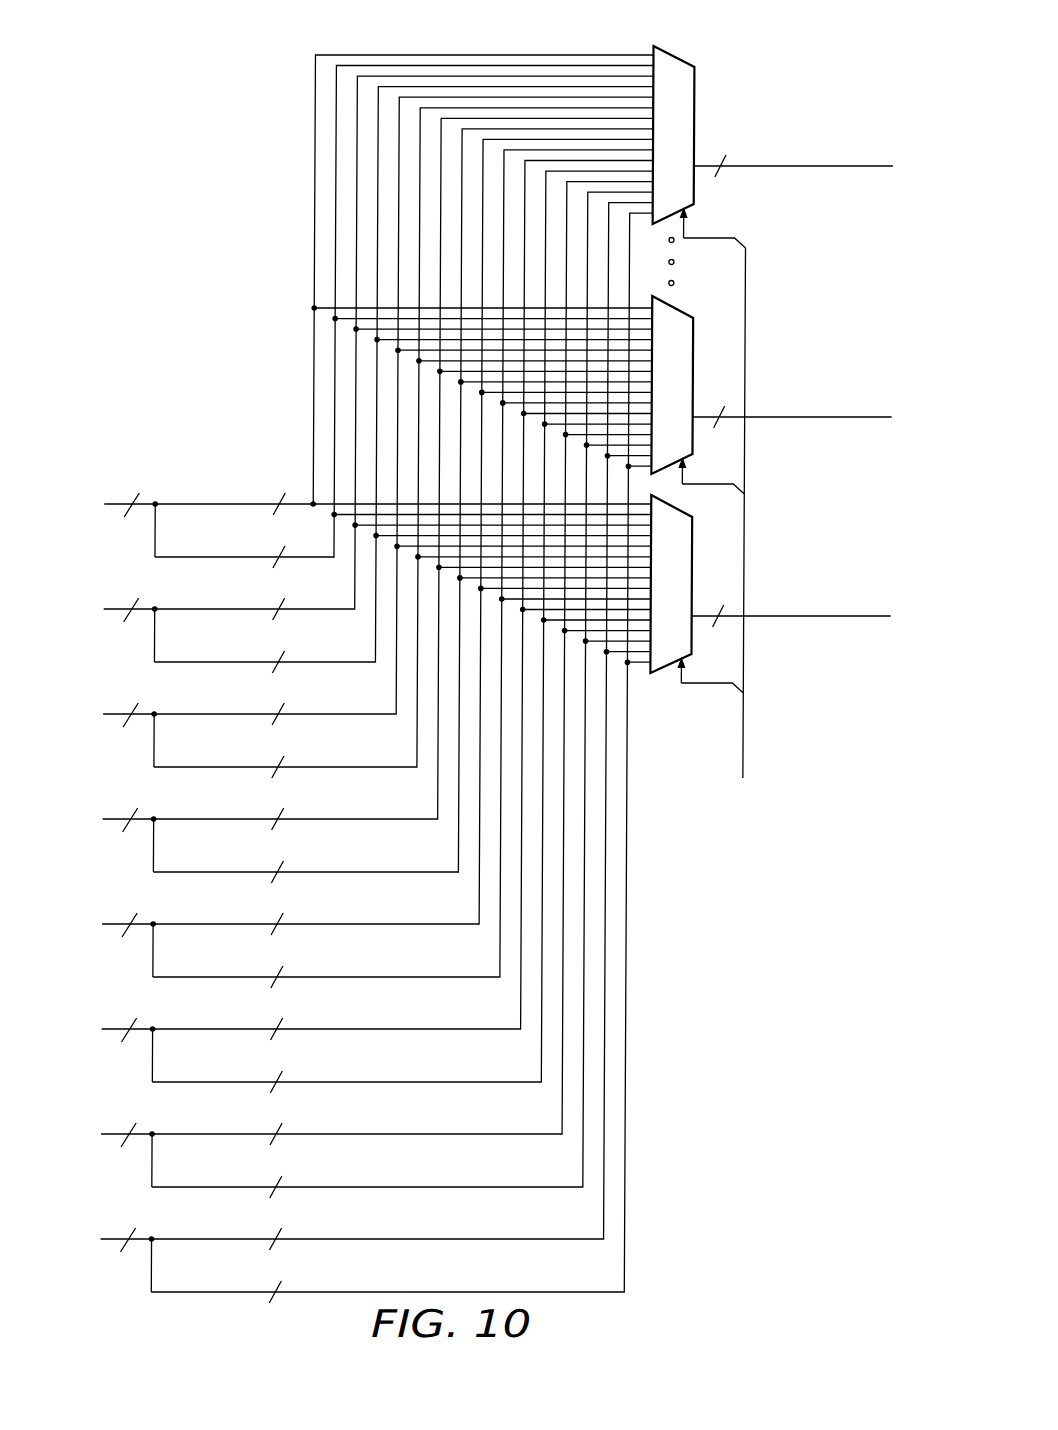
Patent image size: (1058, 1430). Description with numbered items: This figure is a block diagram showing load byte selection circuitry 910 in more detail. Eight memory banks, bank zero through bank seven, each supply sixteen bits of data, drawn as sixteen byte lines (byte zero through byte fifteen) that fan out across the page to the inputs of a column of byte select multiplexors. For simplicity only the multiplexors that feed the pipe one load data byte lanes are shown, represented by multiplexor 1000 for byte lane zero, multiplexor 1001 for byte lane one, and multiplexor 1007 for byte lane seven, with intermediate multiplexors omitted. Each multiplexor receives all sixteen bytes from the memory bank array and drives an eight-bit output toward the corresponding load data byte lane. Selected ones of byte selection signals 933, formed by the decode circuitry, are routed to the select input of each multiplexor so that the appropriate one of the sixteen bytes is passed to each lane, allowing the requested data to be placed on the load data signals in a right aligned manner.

The byte selection circuitry 910 is at (175, 193).
The byte select multiplexor 1000 is at (656, 676).
The byte select multiplexor 1001 is at (708, 303).
The byte select multiplexor 1007 is at (675, 54).
The byte selection signals 933 is at (746, 745).